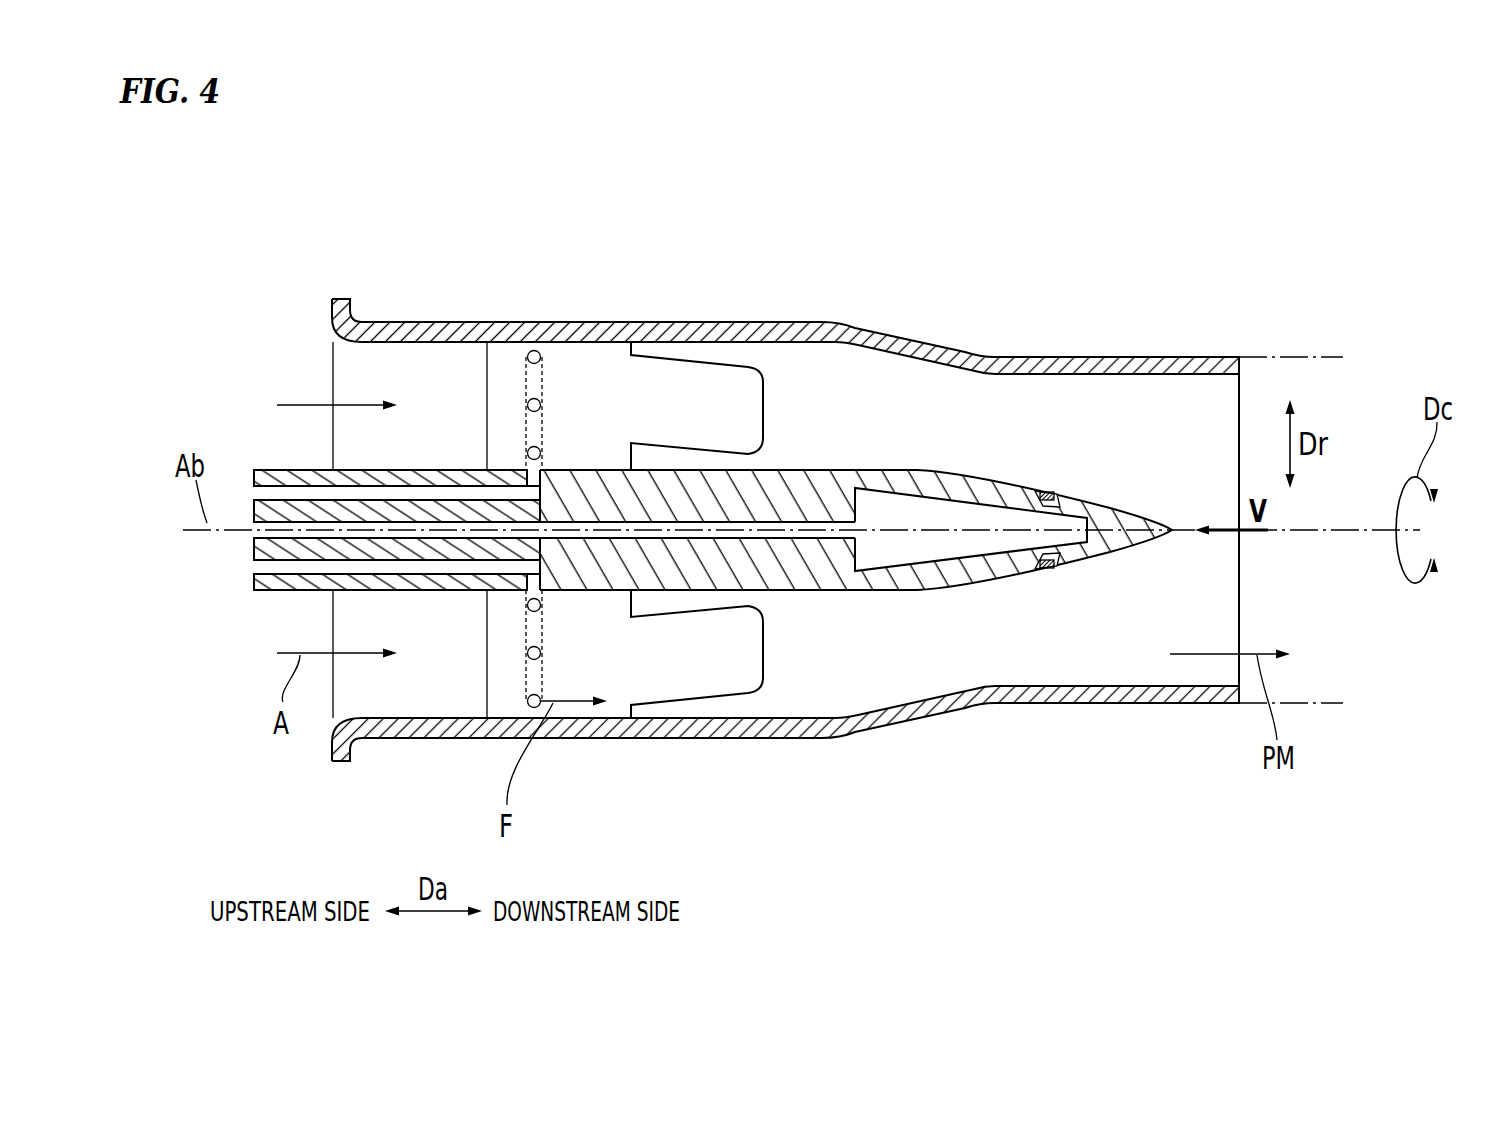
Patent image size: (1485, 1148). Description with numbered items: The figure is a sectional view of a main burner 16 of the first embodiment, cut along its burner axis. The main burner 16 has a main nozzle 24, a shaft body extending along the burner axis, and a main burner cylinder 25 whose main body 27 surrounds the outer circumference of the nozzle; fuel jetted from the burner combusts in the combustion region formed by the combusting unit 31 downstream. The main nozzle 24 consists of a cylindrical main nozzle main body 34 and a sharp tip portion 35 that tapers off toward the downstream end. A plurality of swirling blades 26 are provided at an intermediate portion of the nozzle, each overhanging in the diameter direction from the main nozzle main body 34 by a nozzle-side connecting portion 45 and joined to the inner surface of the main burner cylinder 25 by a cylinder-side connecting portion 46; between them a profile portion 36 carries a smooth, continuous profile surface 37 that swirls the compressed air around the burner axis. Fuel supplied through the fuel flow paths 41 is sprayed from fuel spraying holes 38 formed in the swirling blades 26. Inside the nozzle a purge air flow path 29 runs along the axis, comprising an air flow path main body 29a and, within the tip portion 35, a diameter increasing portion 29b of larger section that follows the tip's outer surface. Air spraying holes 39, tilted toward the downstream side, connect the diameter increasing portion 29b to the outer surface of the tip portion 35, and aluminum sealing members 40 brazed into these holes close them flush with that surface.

The main burner 16 is at (336, 272).
The main nozzle 24 is at (926, 549).
The main burner cylinder 25 is at (1169, 476).
The swirling blade 26 is at (760, 364).
The main body 27 is at (1169, 476).
The purge air flow path 29 is at (1084, 538).
The air flow path main body 29a is at (689, 534).
The diameter increasing portion 29b is at (932, 550).
The combusting unit 31 is at (1304, 355).
The main nozzle main body 34 is at (833, 478).
The tip portion 35 is at (1143, 540).
The profile portion 36 is at (769, 445).
The profile surface 37 is at (769, 445).
The fuel spraying hole 38 is at (533, 350).
The air spraying hole 39 is at (1080, 531).
The sealing member 40 is at (1053, 493).
The fuel flow path 41 is at (272, 482).
The nozzle-side connecting portion 45 is at (487, 488).
The cylinder-side connecting portion 46 is at (610, 333).